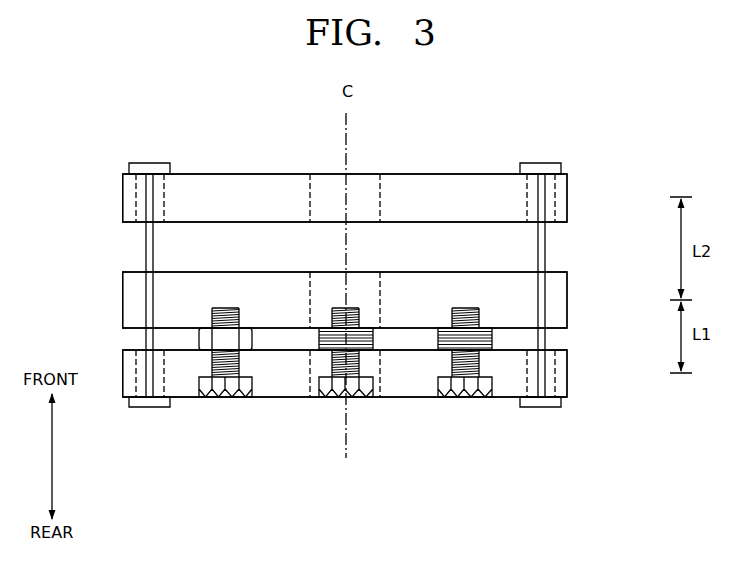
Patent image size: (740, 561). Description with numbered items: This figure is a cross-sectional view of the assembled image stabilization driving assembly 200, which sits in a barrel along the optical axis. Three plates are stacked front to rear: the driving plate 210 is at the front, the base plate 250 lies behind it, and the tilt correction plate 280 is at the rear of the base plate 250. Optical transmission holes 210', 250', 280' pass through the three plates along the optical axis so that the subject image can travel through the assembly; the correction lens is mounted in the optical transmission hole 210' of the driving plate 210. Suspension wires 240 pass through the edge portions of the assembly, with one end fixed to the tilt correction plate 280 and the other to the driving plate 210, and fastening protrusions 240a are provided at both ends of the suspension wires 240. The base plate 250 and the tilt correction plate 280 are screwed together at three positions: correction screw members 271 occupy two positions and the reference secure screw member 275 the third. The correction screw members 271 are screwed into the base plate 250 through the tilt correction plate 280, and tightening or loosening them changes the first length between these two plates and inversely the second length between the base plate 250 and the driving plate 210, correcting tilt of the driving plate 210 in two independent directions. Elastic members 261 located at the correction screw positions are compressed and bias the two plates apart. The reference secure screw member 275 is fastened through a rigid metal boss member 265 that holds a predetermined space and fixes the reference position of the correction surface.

The image stabilization driving assembly 200 is at (102, 307).
The driving plate 210 is at (389, 198).
The optical transmission hole 210' is at (352, 168).
The suspension wires 240 is at (541, 170).
The fastening protrusions 240a is at (145, 172).
The base plate 250 is at (389, 300).
The optical transmission hole 250' is at (366, 286).
The tilt correction plate 280 is at (389, 373).
The optical transmission hole 280' is at (331, 404).
The elastic members 261 is at (327, 343).
The boss member 265 is at (199, 342).
The correction screw members 271 is at (355, 397).
The reference secure screw member 275 is at (212, 398).